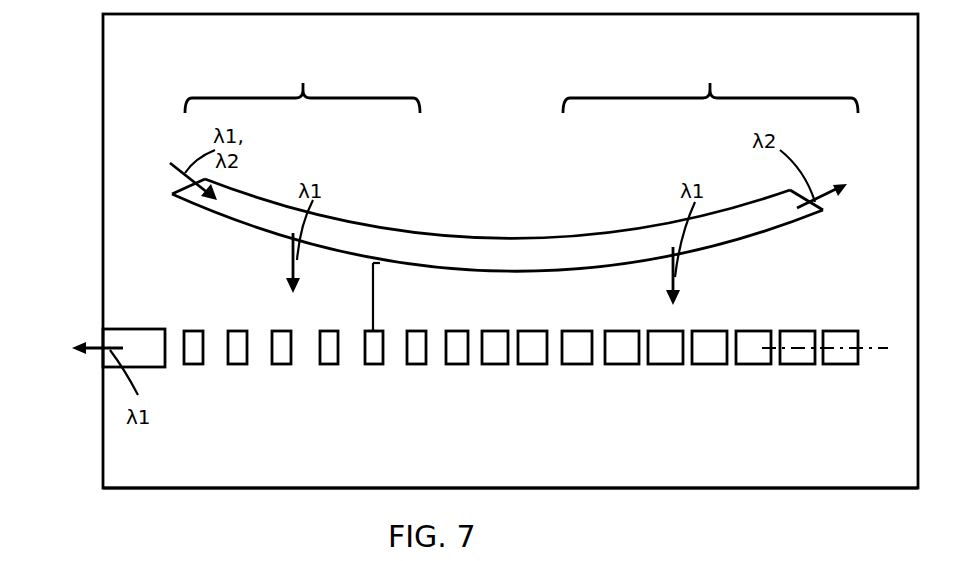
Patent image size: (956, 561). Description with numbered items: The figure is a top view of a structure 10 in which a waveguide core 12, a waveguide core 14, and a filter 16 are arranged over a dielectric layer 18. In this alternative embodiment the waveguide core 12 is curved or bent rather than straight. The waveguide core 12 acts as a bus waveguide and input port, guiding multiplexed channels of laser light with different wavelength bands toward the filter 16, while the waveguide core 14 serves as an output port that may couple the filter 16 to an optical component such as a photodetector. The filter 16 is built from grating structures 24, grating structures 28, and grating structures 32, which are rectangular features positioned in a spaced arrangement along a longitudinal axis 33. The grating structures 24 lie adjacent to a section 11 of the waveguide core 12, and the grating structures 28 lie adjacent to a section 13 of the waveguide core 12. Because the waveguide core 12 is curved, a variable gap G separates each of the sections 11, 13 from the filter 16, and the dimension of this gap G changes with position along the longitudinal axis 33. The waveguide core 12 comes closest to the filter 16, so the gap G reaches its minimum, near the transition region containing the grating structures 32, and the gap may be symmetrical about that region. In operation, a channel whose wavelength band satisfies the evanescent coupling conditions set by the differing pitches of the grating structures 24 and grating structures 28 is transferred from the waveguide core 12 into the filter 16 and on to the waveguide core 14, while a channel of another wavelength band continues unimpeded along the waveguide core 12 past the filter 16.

The structure 10 is at (130, 93).
The section of the waveguide core 11 is at (302, 82).
The waveguide core 12 is at (537, 257).
The section of the waveguide core 13 is at (710, 82).
The waveguide core 14 is at (148, 353).
The filter 16 is at (517, 354).
The dielectric layer 18 is at (143, 443).
The grating structures 24 is at (327, 348).
The grating structures 28 is at (660, 352).
The grating structures 32 is at (493, 352).
The longitudinal axis 33 is at (805, 349).
The gap G is at (373, 297).